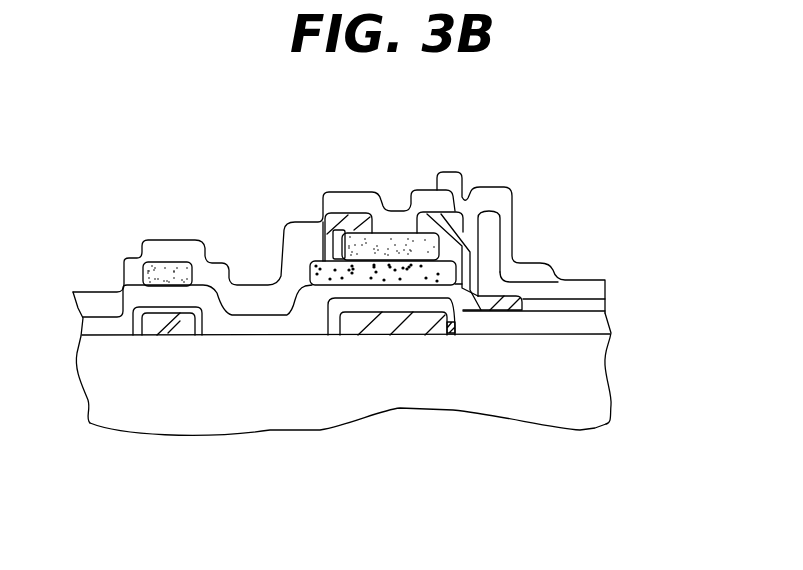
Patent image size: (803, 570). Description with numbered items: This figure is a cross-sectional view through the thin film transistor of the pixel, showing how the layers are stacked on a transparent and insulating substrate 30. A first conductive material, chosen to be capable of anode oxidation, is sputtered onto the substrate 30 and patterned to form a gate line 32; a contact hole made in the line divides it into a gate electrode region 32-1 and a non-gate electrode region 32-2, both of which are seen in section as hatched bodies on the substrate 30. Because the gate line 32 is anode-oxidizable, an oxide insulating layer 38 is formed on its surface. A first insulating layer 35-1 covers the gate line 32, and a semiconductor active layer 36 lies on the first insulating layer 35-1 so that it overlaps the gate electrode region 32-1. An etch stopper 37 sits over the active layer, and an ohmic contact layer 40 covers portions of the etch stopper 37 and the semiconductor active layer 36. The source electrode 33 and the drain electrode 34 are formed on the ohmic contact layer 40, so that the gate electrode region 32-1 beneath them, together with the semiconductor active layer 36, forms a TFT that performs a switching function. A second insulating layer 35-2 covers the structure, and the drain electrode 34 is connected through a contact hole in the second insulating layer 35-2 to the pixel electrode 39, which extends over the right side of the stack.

The substrate 30 is at (603, 388).
The gate line 32 is at (270, 417).
The gate electrode region 32-1 is at (360, 337).
The non-gate electrode region 32-2 is at (322, 413).
The source electrode 33 is at (352, 216).
The drain electrode 34 is at (472, 262).
The first insulating layer 35-1 is at (605, 312).
The second insulating layer 35-2 is at (423, 187).
The semiconductor active layer 36 is at (311, 261).
The etch stopper 37 is at (169, 264).
The oxide insulating layer 38 is at (452, 337).
The pixel electrode 39 is at (503, 190).
The ohmic contact layer 40 is at (343, 222).